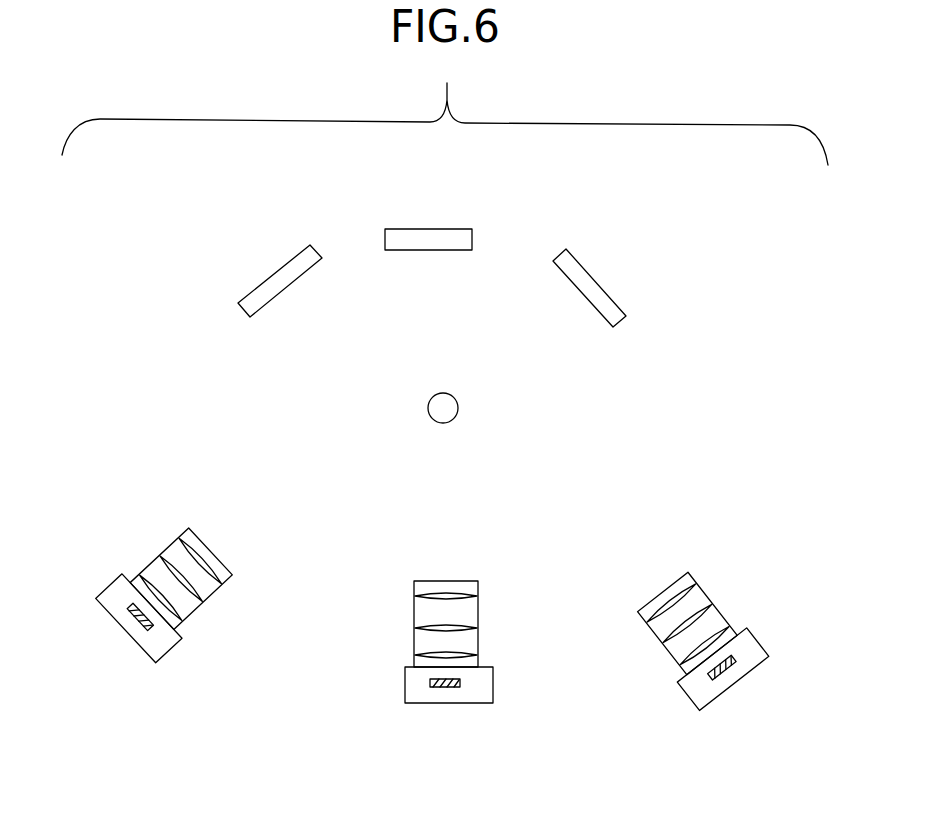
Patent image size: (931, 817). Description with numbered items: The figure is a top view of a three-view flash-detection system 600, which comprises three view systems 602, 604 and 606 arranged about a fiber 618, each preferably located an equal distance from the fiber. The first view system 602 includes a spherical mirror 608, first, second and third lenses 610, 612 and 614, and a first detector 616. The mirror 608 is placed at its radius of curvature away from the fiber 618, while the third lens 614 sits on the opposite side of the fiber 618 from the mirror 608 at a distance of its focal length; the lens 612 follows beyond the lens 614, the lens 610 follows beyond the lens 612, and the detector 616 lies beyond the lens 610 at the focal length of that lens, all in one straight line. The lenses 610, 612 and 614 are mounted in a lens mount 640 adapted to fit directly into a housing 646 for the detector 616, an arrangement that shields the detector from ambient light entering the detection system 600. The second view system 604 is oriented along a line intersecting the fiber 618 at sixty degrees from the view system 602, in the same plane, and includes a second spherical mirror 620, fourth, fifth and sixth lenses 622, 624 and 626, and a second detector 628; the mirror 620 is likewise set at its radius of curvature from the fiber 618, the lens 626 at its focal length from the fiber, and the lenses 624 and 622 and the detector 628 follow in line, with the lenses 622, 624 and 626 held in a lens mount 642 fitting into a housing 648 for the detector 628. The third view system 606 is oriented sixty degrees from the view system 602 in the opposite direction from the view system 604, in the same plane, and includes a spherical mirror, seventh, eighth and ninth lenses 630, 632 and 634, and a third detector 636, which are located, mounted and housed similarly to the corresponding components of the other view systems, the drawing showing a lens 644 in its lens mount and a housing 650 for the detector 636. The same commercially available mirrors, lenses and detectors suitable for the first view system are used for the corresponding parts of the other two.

The three-view detection system 600 is at (252, 205).
The first view system 602 is at (437, 664).
The second view system 604 is at (167, 622).
The third view system 606 is at (697, 656).
The spherical mirror 608 is at (432, 228).
The first lens 610 is at (418, 654).
The second lens 612 is at (418, 627).
The third lens 614 is at (418, 593).
The first detector 616 is at (450, 688).
The fiber 618 is at (430, 394).
The second spherical mirror 620 is at (600, 284).
The fourth lens 622 is at (135, 580).
The fifth lens 624 is at (204, 605).
The sixth lens 626 is at (226, 580).
The second detector 628 is at (256, 287).
The seventh lens 630 is at (726, 632).
The eighth lens 632 is at (663, 651).
The ninth lens 634 is at (658, 600).
The third detector 636 is at (728, 676).
The lens mount 640 is at (450, 580).
The lens mount 642 is at (237, 573).
The lens 644 is at (642, 602).
The housing 646 is at (100, 605).
The housing 648 is at (406, 690).
The base 650 is at (690, 700).